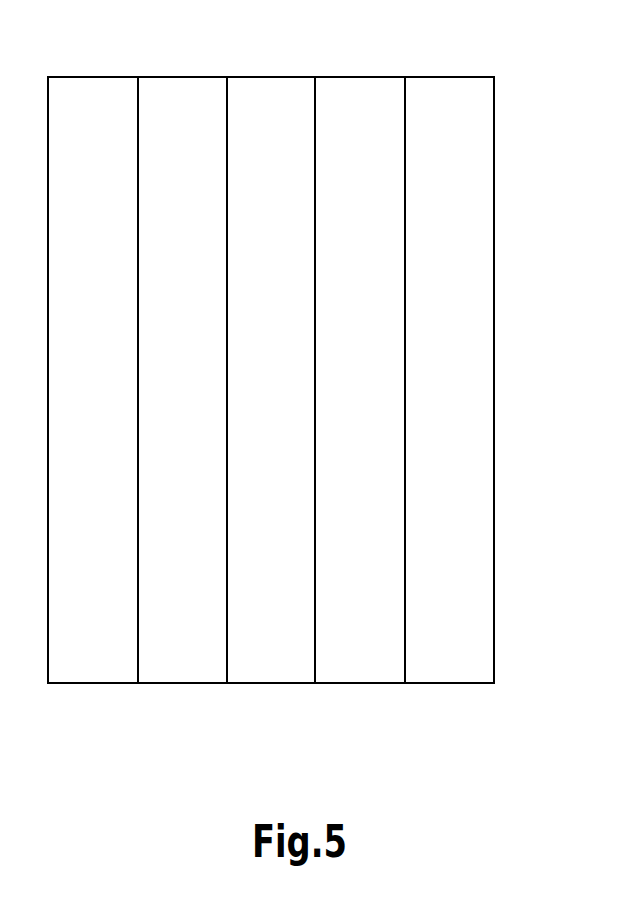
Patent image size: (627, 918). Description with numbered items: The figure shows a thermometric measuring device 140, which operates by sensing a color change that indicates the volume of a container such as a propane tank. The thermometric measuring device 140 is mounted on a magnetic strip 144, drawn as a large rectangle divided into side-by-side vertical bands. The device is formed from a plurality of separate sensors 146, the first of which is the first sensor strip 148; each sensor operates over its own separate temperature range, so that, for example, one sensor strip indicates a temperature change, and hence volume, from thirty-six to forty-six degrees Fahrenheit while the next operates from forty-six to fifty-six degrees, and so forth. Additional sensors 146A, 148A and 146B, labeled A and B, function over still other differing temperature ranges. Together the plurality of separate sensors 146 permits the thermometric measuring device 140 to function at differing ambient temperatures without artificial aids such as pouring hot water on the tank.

The thermometric measuring device 140 is at (537, 372).
The magnetic strip 144 is at (494, 155).
The separate sensors 146 is at (94, 634).
The first sensor strip 148 is at (173, 652).
The additional sensor A 146A is at (262, 652).
The additional sensor A 148A is at (356, 658).
The additional sensor B 146B is at (449, 663).